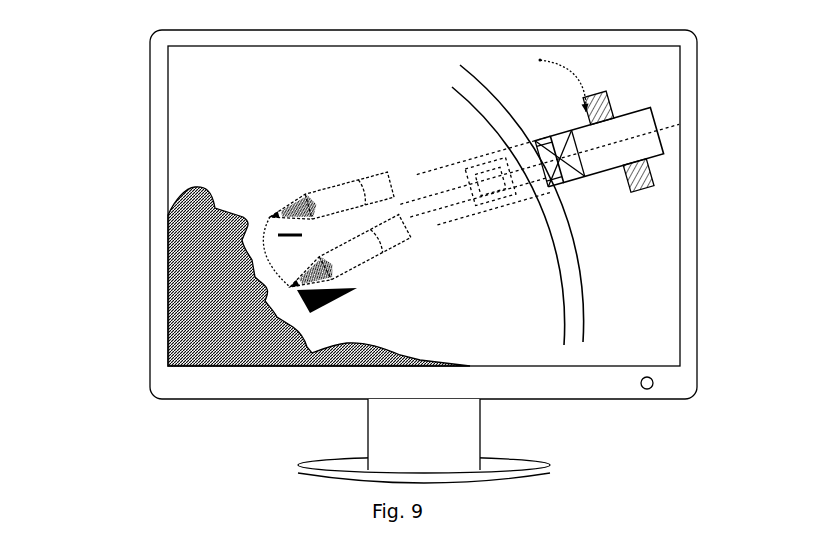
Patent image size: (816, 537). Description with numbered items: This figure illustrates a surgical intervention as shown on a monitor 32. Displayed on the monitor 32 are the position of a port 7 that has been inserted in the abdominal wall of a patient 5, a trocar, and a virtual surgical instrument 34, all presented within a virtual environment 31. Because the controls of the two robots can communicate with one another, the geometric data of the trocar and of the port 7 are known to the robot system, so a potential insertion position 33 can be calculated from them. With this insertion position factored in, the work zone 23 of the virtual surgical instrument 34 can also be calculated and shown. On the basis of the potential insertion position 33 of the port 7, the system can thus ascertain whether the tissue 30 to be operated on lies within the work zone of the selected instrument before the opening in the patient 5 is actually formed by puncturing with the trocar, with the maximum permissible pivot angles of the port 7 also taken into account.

The patient 5 is at (568, 307).
The port 7 is at (640, 178).
The work zone 23 is at (168, 222).
The tissue 30 is at (168, 295).
The virtual environment 31 is at (213, 94).
The monitor 32 is at (174, 388).
The potential insertion position 33 is at (595, 234).
The virtual surgical instrument 34 is at (415, 240).